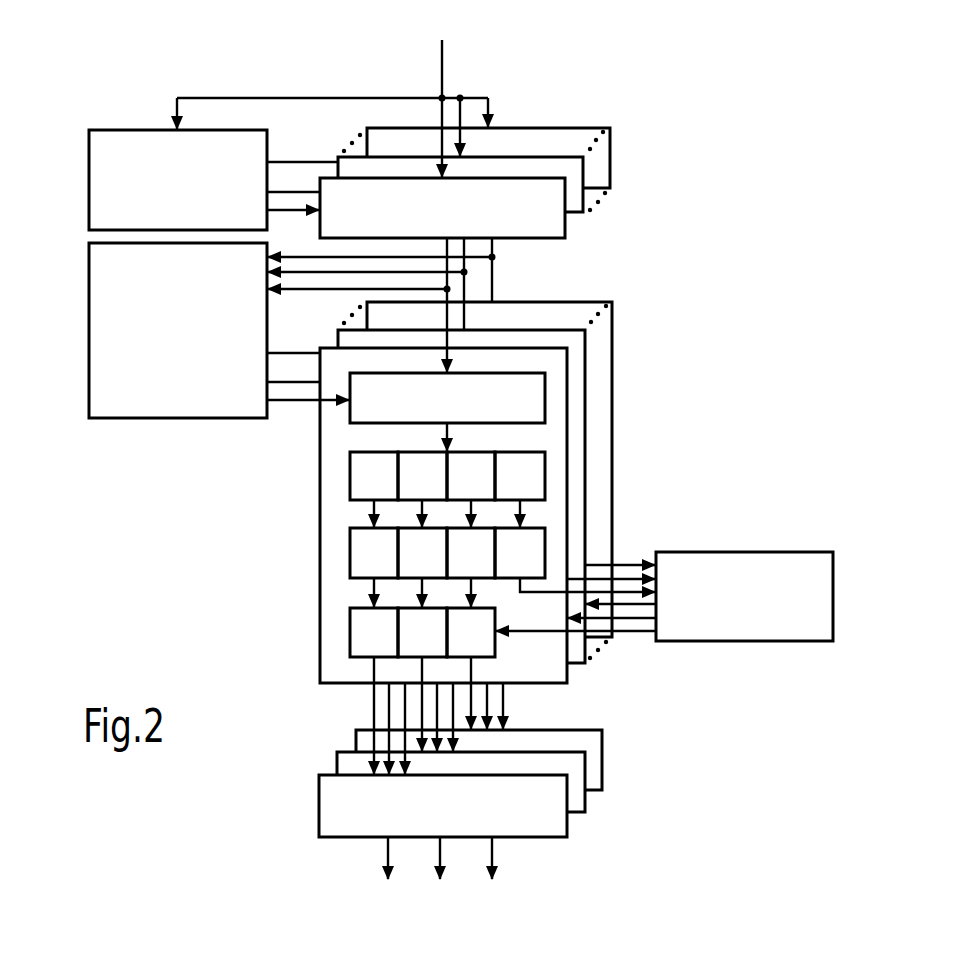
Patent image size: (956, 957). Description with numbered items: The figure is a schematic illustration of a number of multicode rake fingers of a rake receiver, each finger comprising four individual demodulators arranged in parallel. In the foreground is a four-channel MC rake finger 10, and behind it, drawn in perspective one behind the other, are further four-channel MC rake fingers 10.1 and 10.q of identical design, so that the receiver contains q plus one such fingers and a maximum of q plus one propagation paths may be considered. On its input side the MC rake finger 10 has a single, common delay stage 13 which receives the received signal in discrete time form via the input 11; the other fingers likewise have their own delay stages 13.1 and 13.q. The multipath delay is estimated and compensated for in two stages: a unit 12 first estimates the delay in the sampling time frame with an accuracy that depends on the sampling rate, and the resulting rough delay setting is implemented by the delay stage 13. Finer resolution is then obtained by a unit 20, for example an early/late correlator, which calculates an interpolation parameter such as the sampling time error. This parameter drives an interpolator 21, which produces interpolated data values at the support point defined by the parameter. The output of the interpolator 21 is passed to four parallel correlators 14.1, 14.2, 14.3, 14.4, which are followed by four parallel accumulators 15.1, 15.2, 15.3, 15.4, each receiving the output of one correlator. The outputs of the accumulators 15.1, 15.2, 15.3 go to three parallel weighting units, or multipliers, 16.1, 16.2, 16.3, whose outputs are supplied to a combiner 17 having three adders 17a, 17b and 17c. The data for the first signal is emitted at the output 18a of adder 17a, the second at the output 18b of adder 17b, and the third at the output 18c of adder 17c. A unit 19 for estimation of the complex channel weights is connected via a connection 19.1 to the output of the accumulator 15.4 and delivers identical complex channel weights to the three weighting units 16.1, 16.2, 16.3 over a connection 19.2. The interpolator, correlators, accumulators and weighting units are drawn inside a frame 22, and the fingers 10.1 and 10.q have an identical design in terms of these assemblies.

The multicode rake finger 10 is at (503, 76).
The multicode rake finger 10.1 is at (530, 104).
The multicode rake finger 10.q is at (588, 104).
The input 11 is at (445, 60).
The unit for estimating the multipath delay 12 is at (190, 194).
The delay stage 13 is at (455, 225).
The delay stage 13.1 is at (575, 206).
The delay stage 13.q is at (612, 170).
The correlator 14.1 is at (392, 492).
The correlator 14.2 is at (440, 492).
The correlator 14.3 is at (489, 492).
The correlator 14.4 is at (537, 492).
The accumulator 15.1 is at (392, 569).
The accumulator 15.2 is at (440, 569).
The accumulator 15.3 is at (489, 569).
The accumulator 15.4 is at (537, 569).
The weighting unit 16.1 is at (392, 650).
The weighting unit 16.2 is at (440, 650).
The weighting unit 16.3 is at (489, 650).
The combiner 17 is at (434, 795).
The adder 17a is at (458, 818).
The adder 17b is at (578, 812).
The adder 17c is at (603, 771).
The output 18a is at (381, 858).
The output 18b is at (433, 858).
The output 18c is at (485, 858).
The unit for estimation of the complex channel weights 19 is at (756, 614).
The connection 19.1 is at (627, 591).
The connection 19.2 is at (631, 637).
The unit for calculation of an interpolation parameter 20 is at (190, 347).
The interpolator 21 is at (459, 415).
The frame 22 is at (567, 355).